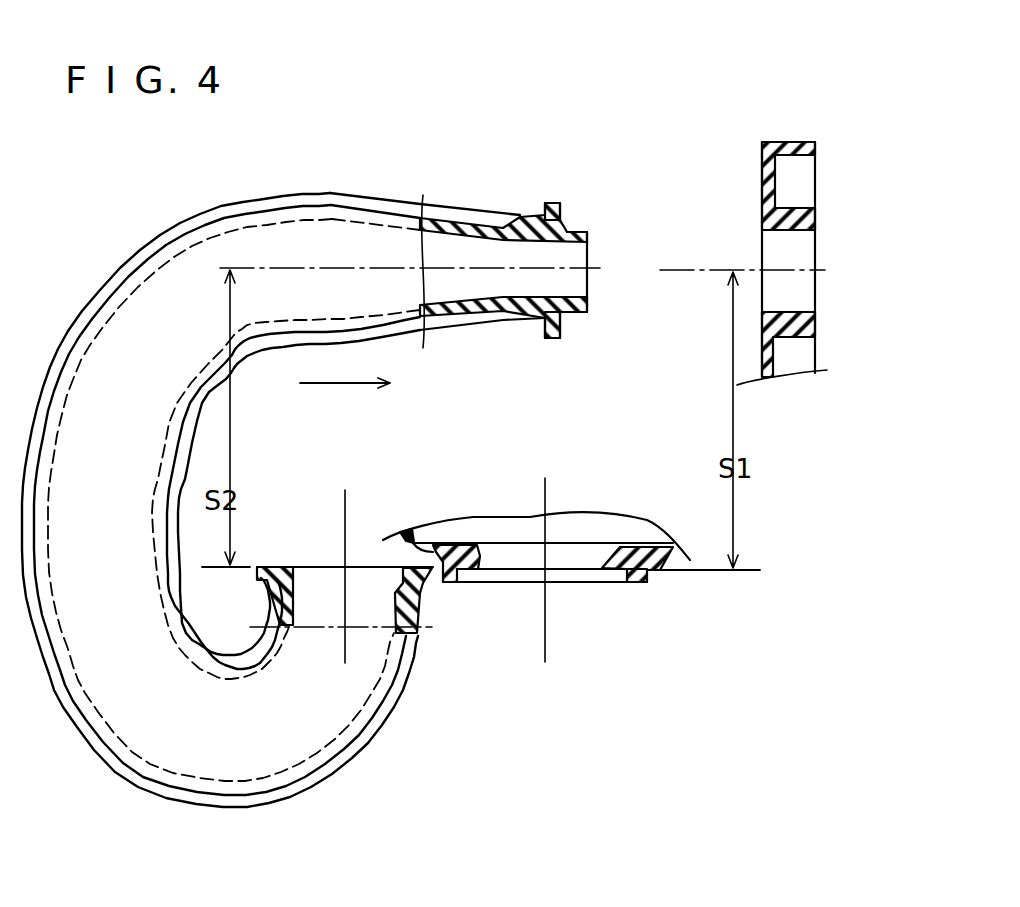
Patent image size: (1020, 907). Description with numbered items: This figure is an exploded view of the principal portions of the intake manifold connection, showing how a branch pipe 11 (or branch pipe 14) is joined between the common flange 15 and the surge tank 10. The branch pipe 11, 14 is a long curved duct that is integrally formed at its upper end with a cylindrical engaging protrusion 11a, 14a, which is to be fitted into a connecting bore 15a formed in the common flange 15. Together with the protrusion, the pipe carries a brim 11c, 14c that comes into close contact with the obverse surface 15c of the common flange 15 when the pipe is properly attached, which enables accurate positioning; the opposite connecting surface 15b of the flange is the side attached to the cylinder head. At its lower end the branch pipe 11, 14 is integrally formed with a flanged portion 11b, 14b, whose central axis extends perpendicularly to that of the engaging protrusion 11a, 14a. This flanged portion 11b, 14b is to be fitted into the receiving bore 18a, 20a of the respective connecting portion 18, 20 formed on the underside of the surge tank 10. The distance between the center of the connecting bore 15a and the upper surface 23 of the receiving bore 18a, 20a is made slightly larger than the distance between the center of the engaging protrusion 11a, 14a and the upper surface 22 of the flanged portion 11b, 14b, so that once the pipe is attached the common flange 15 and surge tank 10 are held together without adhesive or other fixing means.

The surge tank 10 is at (620, 513).
The branch pipe 11 is at (202, 236).
The engaging protrusion 11a is at (450, 219).
The flanged portion 11b is at (425, 582).
The brim 11c is at (547, 203).
The branch pipe 14 is at (271, 472).
The engaging protrusion 14a is at (450, 219).
The flanged portion 14b is at (406, 653).
The brim 14c is at (482, 219).
The common flange 15 is at (752, 204).
The connecting bore 15a is at (774, 256).
The connecting surface 15b is at (818, 178).
The obverse surface 15c is at (758, 176).
The connecting portion 18 is at (570, 608).
The receiving bore 18a is at (596, 583).
The connecting portion 20 is at (570, 608).
The receiving bore 20a is at (604, 660).
The upper surface of flanged portion 22 is at (318, 567).
The upper surface of receiving bore 23 is at (476, 580).